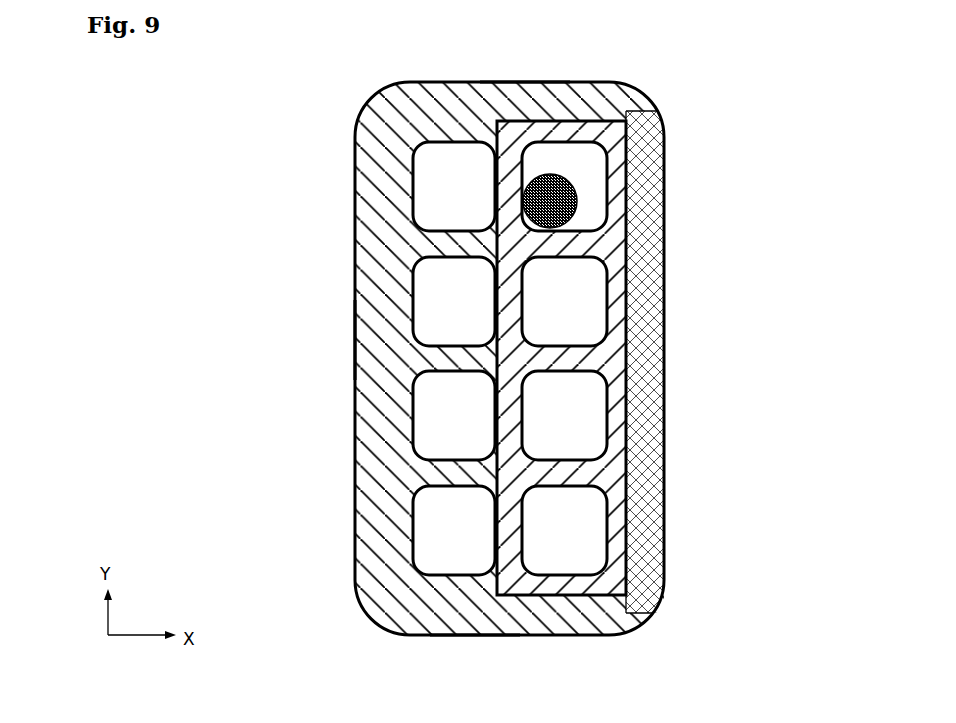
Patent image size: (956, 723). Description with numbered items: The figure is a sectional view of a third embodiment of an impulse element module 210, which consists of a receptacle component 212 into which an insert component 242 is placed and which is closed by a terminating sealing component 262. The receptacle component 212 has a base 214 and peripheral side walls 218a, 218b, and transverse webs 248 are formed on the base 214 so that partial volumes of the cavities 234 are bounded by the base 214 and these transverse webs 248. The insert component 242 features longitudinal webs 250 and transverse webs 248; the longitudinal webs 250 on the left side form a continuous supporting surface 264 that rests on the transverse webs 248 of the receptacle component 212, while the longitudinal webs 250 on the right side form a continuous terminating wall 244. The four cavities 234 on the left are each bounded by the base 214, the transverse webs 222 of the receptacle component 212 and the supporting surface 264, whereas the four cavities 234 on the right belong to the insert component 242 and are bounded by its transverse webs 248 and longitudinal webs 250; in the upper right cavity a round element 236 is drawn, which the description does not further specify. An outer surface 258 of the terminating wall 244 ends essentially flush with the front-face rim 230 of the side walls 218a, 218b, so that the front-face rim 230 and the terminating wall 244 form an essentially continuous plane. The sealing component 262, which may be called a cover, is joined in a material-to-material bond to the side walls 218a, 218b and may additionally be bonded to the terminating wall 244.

The impulse element module 210 is at (305, 130).
The receptacle component 212 is at (356, 240).
The base 214 is at (355, 340).
The peripheral side wall 218a is at (525, 92).
The peripheral side wall 218b is at (463, 618).
The transverse webs 222 is at (443, 360).
The front-face rim 230 is at (658, 111).
The cavities 234 is at (581, 540).
The conductor 236 is at (575, 196).
The insert component 242 is at (628, 203).
The terminating wall 244 is at (617, 262).
The transverse webs 248 is at (573, 360).
The longitudinal webs 250 is at (503, 167).
The outer surface 258 is at (628, 310).
The sealing component 262 is at (668, 240).
The supporting surface 264 is at (490, 549).